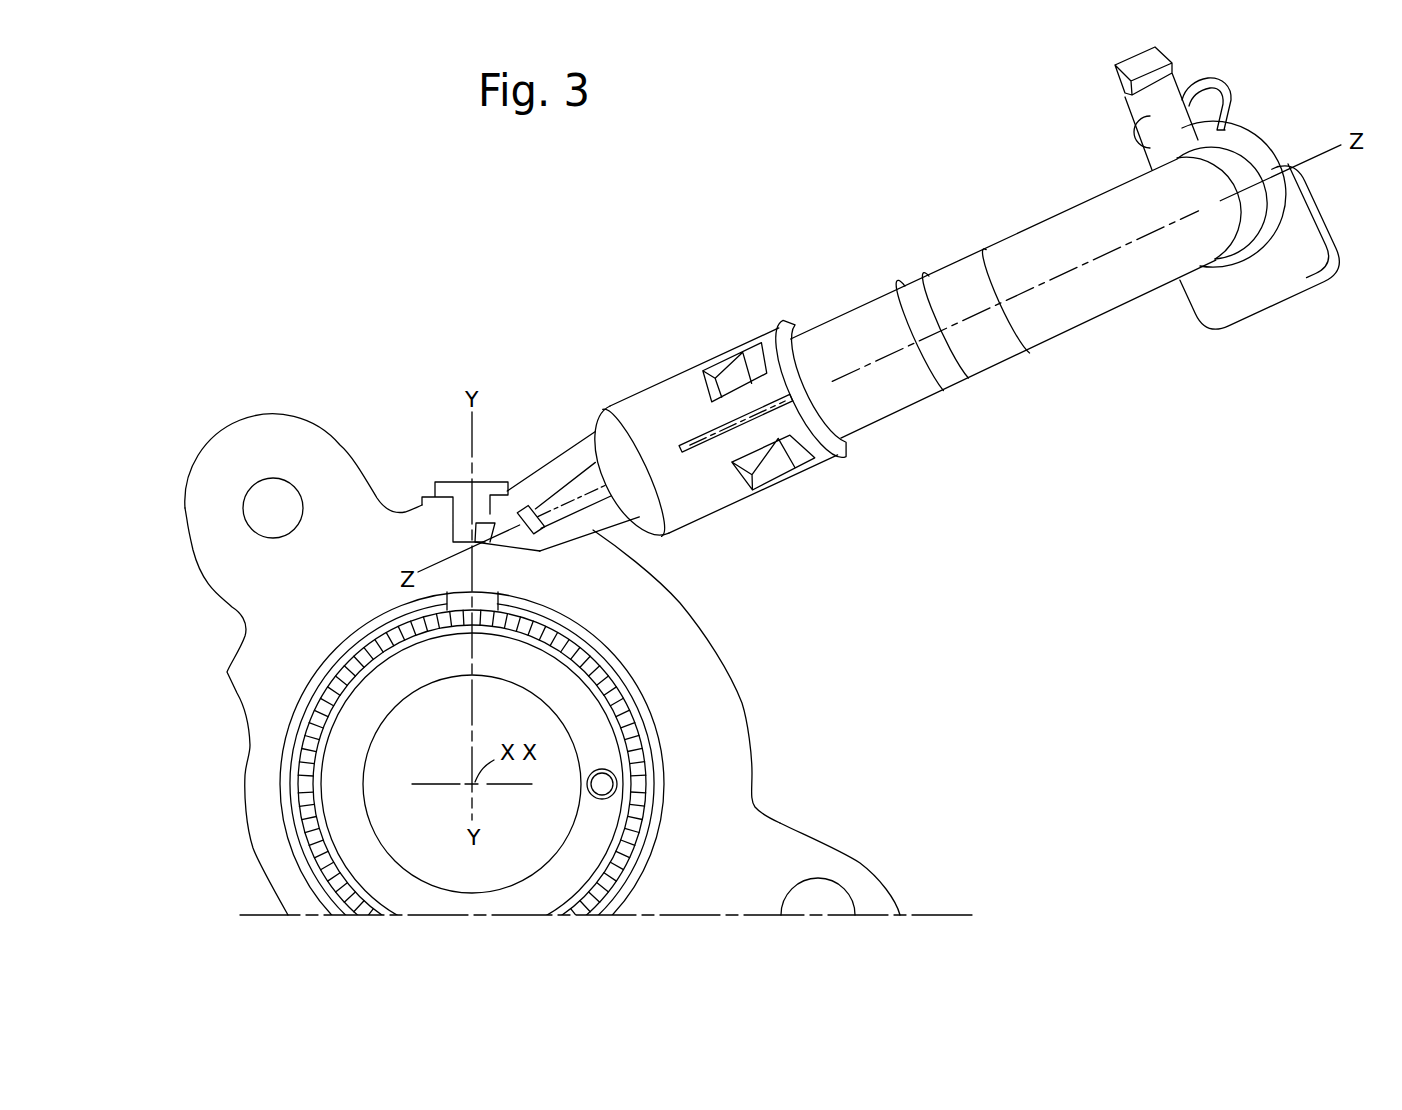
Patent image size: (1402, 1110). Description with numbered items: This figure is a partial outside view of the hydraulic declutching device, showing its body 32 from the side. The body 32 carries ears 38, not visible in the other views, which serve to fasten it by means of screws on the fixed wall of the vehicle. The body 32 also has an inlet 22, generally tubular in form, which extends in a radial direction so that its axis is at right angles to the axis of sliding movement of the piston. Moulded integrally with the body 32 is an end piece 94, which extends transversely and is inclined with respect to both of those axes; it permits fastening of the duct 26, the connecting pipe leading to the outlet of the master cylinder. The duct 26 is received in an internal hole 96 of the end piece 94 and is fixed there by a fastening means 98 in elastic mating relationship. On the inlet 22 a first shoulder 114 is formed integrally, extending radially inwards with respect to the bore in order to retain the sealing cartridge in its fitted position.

The inlet 22 is at (452, 503).
The duct 26 is at (889, 362).
The body 32 is at (749, 693).
The ears 38 is at (272, 432).
The end piece 94 is at (665, 457).
The internal hole 96 is at (807, 392).
The fastening means 98 is at (754, 418).
The first shoulder 114 is at (562, 499).